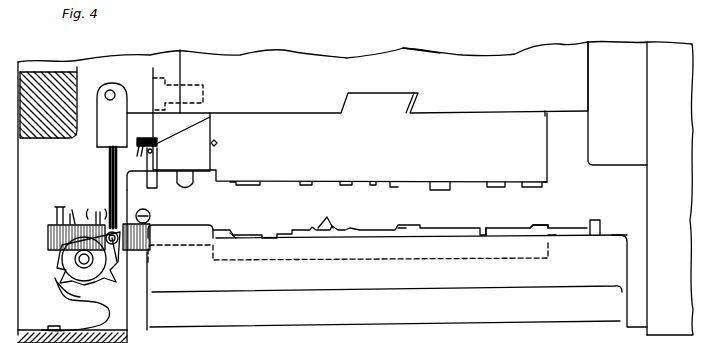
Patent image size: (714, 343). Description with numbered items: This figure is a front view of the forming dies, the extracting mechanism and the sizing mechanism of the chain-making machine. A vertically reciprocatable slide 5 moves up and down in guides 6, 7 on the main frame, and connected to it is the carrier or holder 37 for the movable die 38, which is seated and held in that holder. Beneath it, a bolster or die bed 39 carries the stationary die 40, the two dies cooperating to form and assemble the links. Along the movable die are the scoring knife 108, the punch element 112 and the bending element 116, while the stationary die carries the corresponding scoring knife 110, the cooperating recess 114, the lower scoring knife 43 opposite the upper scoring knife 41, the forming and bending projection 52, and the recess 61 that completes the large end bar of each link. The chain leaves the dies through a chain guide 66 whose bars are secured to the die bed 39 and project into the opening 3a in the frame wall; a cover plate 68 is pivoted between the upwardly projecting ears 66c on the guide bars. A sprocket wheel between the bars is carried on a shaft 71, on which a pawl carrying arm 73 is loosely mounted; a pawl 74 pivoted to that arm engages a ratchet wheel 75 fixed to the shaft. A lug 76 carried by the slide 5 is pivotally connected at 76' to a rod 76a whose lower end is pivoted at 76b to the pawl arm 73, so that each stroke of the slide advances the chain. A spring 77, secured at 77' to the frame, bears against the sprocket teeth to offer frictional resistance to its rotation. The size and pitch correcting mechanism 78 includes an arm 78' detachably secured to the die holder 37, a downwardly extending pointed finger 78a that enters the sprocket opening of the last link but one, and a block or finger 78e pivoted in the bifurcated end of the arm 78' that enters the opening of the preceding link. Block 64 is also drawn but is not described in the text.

The opening 3a is at (42, 133).
The slide 5 is at (440, 58).
The guide 6 is at (181, 57).
The guide 7 is at (597, 72).
The carrier or holder 37 is at (357, 139).
The movable die 38 is at (516, 186).
The bolster or die bed 39 is at (608, 245).
The stationary die 40 is at (543, 228).
The scoring knife or chisel 41 is at (394, 188).
The scoring knife or chisel 43 is at (403, 228).
The forming and bending projection 52 is at (320, 226).
The recess 61 is at (232, 233).
The block 64 is at (598, 220).
The chain guide 66 is at (203, 229).
The ears 66c is at (150, 216).
The cover plate 68 is at (75, 209).
The shaft 71 is at (79, 260).
The pawl carrying arm 73 is at (116, 254).
The pawl 74 is at (96, 209).
The ratchet wheel 75 is at (56, 251).
The lug or projection 76 is at (130, 89).
The pivotal connection 76' is at (108, 77).
The rod 76a is at (110, 168).
The pivotal connection 76b is at (101, 213).
The spring 77 is at (76, 304).
The spring attachment point 77' is at (42, 316).
The size and pitch correcting mechanism 78 is at (184, 141).
The arm 78' is at (161, 137).
The finger 78a is at (187, 176).
The block or finger 78e is at (152, 176).
The scoring knife or chisel 108 is at (545, 180).
The scoring knife or chisel 110 is at (538, 228).
The punch element 112 is at (496, 189).
The recess 114 is at (494, 228).
The bending element 116 is at (441, 192).